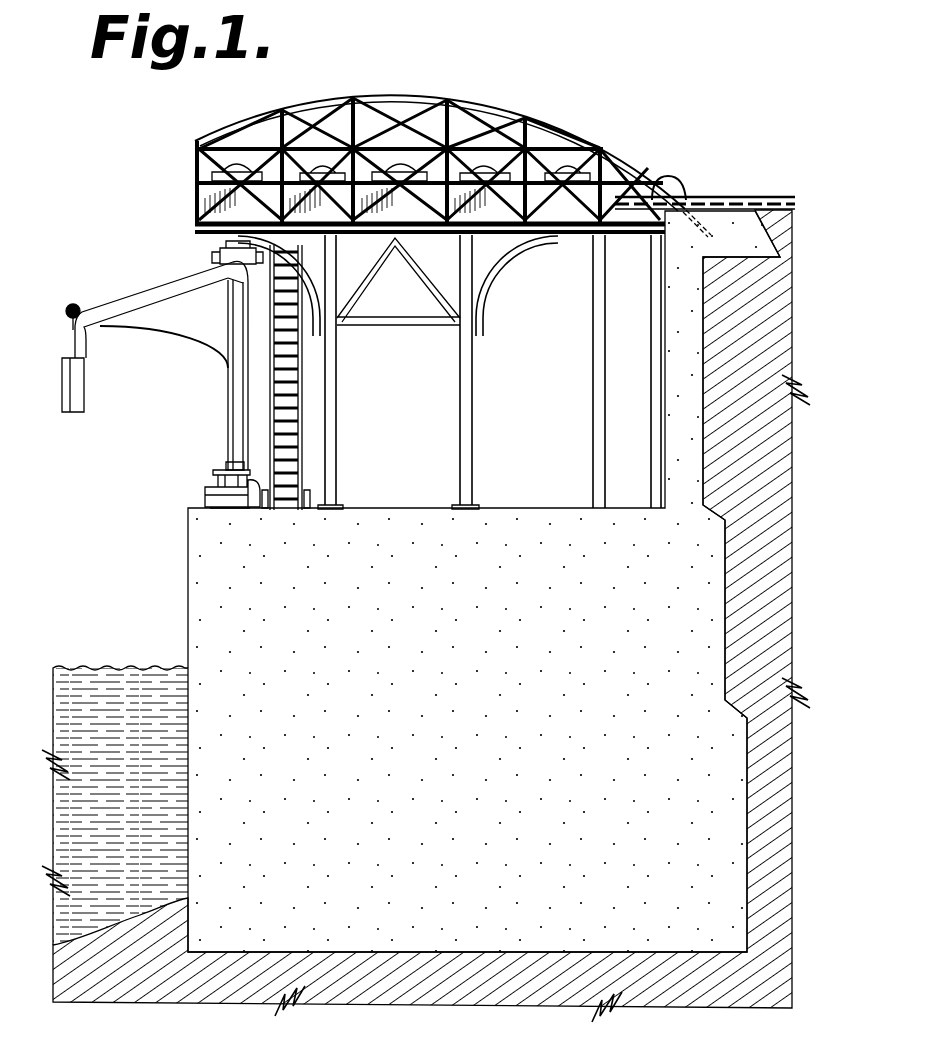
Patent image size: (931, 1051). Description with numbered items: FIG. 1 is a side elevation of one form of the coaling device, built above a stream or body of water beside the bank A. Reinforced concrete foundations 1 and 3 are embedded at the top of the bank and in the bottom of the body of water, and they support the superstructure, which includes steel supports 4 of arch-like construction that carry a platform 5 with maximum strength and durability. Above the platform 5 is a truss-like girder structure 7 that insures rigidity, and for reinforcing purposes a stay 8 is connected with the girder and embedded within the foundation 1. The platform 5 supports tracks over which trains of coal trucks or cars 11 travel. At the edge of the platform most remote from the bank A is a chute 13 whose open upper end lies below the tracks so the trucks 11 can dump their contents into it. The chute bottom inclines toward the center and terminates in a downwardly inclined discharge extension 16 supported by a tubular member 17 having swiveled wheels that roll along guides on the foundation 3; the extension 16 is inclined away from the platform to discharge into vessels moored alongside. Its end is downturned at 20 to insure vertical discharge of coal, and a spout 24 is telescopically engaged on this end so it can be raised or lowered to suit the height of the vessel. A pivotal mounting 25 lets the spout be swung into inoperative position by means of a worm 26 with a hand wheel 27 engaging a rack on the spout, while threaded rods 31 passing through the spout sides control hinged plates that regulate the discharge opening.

The reinforced concrete foundation 1 is at (730, 205).
The reinforced concrete foundation 3 is at (548, 509).
The steel supports 4 is at (338, 430).
The platform 5 is at (578, 234).
The truss like girder structure 7 is at (431, 166).
The stay 8 is at (628, 166).
The coal trucks or cars 11 is at (210, 176).
The chute 13 is at (172, 286).
The discharge extension 16 is at (126, 314).
The tubular member 17 is at (230, 412).
The downturned end 20 is at (86, 348).
The spout 24 is at (85, 398).
The pivotal mounting 25 is at (210, 482).
The worm 26 is at (236, 469).
The hand wheel 27 is at (240, 503).
The threaded rods 31 is at (216, 251).
The bank A is at (778, 590).